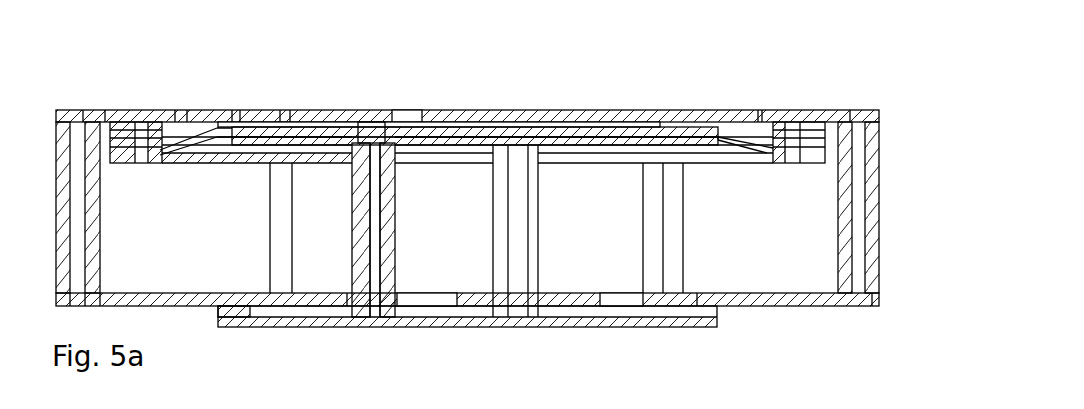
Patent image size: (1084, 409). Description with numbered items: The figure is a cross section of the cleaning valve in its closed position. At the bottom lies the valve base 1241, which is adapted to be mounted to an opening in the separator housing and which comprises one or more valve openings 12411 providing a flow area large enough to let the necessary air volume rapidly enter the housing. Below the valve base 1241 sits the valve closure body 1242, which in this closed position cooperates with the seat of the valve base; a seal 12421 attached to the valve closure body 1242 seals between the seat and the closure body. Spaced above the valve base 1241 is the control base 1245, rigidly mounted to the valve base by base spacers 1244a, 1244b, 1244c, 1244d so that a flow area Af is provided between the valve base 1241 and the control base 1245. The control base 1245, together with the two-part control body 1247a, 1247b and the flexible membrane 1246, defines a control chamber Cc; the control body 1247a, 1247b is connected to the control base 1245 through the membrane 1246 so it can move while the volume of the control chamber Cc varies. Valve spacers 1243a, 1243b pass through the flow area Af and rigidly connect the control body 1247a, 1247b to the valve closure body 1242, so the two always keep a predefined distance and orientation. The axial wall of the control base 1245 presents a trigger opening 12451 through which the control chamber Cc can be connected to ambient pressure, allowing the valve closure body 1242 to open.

The control base 1245 is at (778, 116).
The trigger opening 12451 is at (407, 118).
The base spacer 1244d is at (73, 168).
The base spacer 1244a is at (875, 213).
The base spacer 1244b is at (667, 270).
The base spacer 1244c is at (280, 168).
The valve spacer 1243a is at (520, 268).
The valve spacer 1243b is at (373, 268).
The valve base 1241 is at (787, 298).
The valve opening 12411 is at (467, 302).
The valve closure body 1242 is at (710, 322).
The seal 12421 is at (237, 310).
The flexible membrane 1246 is at (737, 135).
The control body 1247a is at (673, 137).
The control body 1247b is at (573, 127).
The control chamber Cc is at (173, 135).
The flow area Af is at (200, 238).